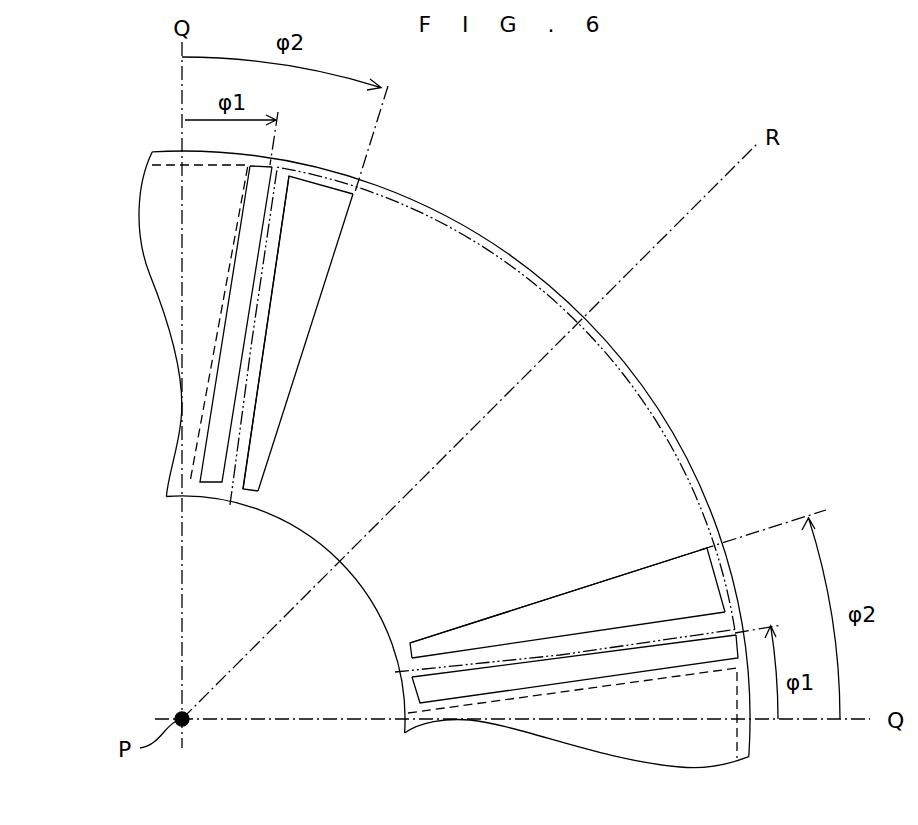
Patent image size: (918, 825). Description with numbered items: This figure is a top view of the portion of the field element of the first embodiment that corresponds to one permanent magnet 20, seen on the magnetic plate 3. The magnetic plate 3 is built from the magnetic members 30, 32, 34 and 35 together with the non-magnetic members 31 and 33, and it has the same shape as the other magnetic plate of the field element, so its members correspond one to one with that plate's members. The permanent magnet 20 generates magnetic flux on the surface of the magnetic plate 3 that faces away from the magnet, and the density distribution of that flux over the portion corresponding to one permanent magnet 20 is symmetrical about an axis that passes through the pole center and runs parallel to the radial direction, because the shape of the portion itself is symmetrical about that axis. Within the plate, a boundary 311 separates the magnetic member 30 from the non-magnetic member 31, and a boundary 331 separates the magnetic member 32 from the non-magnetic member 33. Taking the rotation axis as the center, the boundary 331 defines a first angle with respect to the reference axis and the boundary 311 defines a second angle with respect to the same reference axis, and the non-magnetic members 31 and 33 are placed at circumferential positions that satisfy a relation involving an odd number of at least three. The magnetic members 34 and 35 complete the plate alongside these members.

The magnetic plate 3 is at (451, 454).
The permanent magnet 20 is at (497, 305).
The magnetic member 30 is at (617, 400).
The non-magnetic member 31 is at (668, 572).
The boundary 311 is at (541, 588).
The magnetic member 32 is at (418, 663).
The non-magnetic member 33 is at (408, 686).
The boundary 331 is at (488, 652).
The magnetic member 34 is at (162, 270).
The magnetic member 35 is at (332, 180).